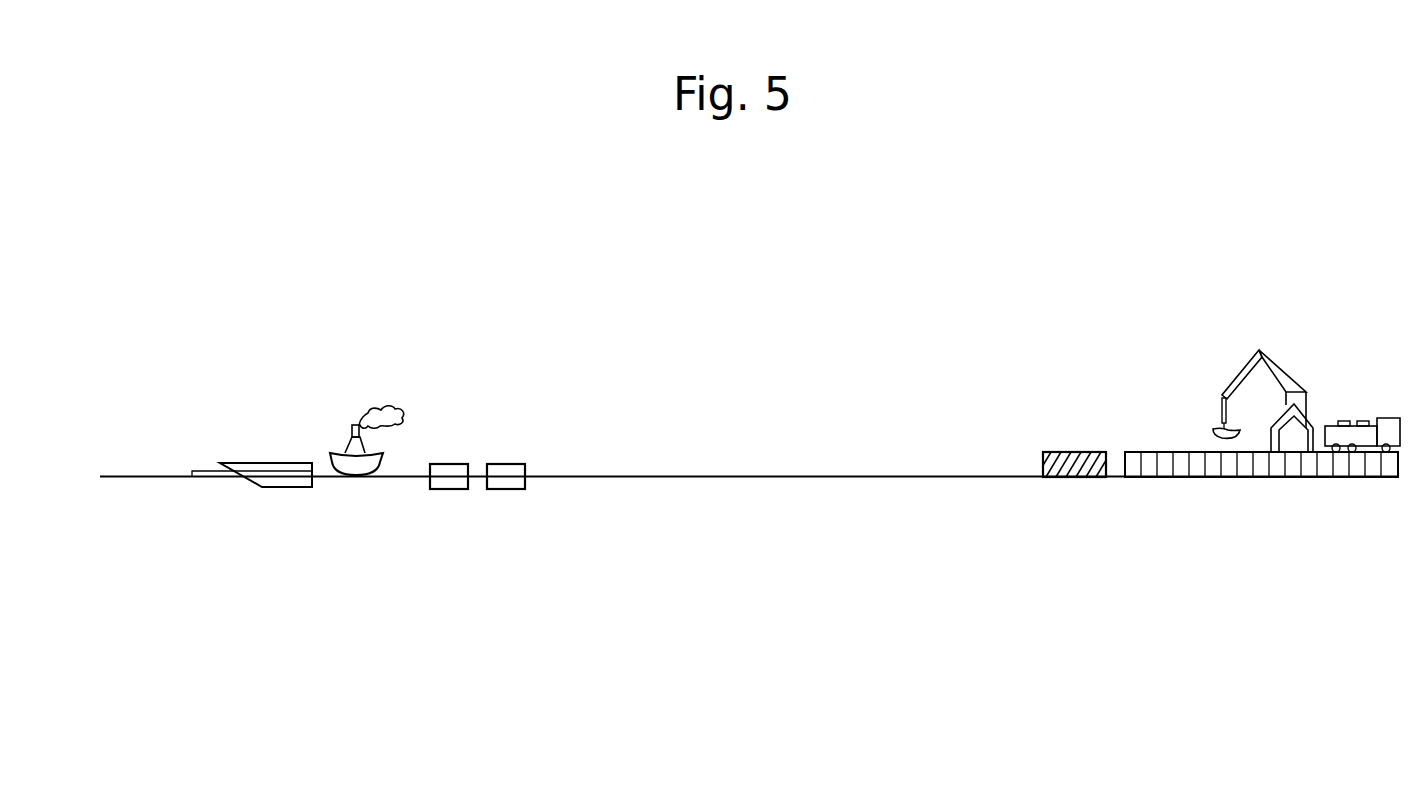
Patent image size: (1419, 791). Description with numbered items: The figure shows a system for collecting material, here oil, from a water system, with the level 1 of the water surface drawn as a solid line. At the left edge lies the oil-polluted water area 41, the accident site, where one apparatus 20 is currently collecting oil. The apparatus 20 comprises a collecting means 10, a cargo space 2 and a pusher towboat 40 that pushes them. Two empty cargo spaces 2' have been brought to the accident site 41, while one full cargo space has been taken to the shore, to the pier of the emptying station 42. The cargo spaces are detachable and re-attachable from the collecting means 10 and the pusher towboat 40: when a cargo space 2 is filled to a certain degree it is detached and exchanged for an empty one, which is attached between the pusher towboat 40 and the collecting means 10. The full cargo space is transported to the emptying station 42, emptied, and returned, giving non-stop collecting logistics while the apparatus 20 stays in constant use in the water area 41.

The level of the water surface 1 is at (862, 476).
The cargo space 2 is at (290, 592).
The empty cargo spaces 2' is at (503, 389).
The collecting means 10 is at (207, 476).
The apparatus 20 is at (248, 396).
The pusher towboat 40 is at (352, 445).
The water area 41 is at (368, 525).
The emptying station 42 is at (1232, 305).